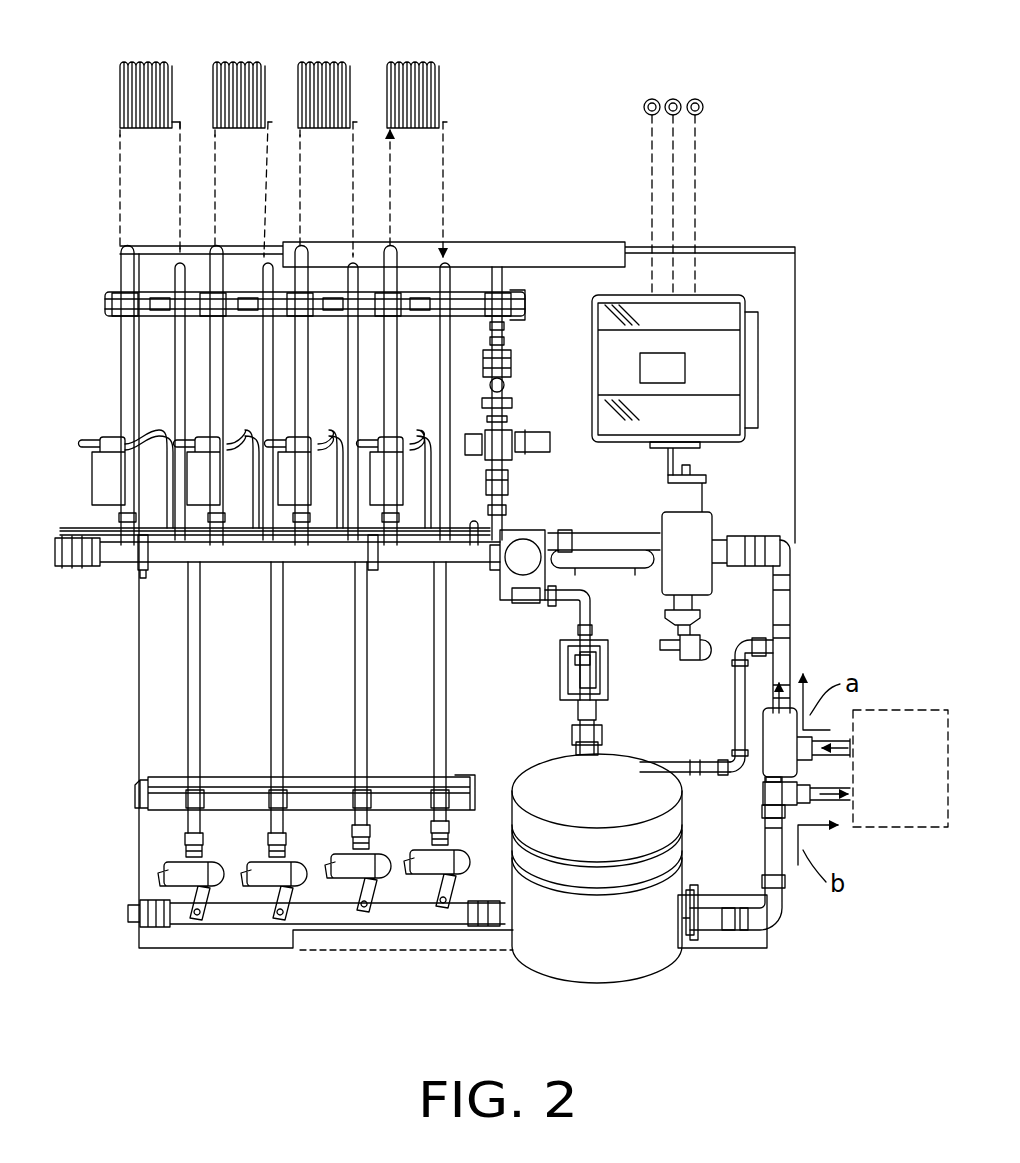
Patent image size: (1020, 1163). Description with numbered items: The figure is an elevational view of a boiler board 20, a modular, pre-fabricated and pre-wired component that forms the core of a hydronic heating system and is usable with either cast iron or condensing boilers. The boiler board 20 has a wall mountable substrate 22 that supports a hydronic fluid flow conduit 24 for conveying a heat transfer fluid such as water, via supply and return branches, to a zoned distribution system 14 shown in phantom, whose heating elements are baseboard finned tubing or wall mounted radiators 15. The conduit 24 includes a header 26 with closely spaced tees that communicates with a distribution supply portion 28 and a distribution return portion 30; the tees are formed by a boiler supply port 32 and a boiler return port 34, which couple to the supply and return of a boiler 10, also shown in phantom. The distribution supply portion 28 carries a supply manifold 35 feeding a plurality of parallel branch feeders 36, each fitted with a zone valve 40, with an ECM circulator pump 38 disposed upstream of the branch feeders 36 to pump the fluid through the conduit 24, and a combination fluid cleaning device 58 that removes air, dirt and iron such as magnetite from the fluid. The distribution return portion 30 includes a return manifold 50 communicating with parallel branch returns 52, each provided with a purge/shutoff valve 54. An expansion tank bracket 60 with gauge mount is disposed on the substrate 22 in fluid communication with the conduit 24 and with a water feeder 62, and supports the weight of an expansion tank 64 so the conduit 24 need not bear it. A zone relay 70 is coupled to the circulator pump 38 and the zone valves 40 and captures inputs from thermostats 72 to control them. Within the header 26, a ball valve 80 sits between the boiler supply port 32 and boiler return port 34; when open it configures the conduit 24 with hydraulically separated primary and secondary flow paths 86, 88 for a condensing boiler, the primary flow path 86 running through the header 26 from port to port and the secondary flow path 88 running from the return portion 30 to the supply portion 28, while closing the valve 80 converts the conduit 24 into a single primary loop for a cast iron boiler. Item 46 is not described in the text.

The boiler 10 is at (942, 782).
The zoned distribution system 14 is at (470, 183).
The radiators 15 is at (340, 62).
The boiler board 20 is at (745, 182).
The wall mountable substrate 22 is at (145, 850).
The hydronic fluid flow conduit 24 is at (110, 578).
The header 26 is at (790, 700).
The distribution supply portion 28 is at (797, 565).
The distribution return portion 30 is at (772, 912).
The boiler supply port 32 is at (840, 730).
The boiler return port 34 is at (845, 815).
The supply manifold 35 is at (225, 570).
The branch feeders 36 is at (213, 345).
The ECM circulator pump 38 is at (545, 532).
The zone valve 40 is at (205, 470).
The valve outlet fitting 46 is at (520, 605).
The return manifold 50 is at (140, 915).
The branch returns 52 is at (190, 768).
The purge/shutoff valve 54 is at (205, 915).
The combination fluid cleaning device 58 is at (700, 540).
The expansion tank bracket 60 is at (572, 700).
The water feeder 62 is at (515, 440).
The expansion tank 64 is at (615, 804).
The zone relay 70 is at (708, 332).
The thermostats 72 is at (645, 105).
The valve 80 is at (745, 762).
The primary flow path 86 is at (760, 780).
The secondary flow path 88 is at (760, 740).